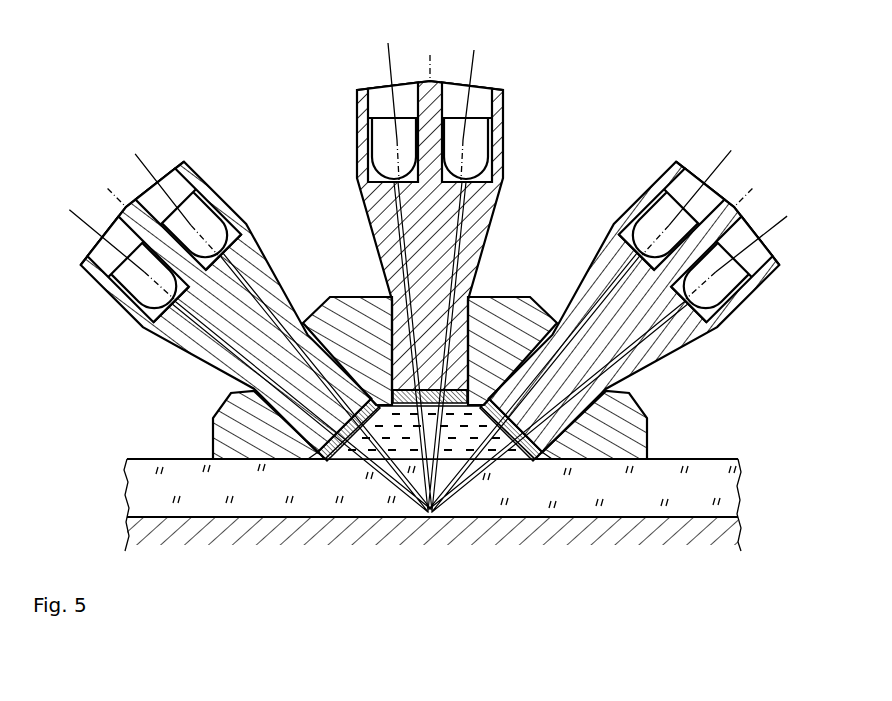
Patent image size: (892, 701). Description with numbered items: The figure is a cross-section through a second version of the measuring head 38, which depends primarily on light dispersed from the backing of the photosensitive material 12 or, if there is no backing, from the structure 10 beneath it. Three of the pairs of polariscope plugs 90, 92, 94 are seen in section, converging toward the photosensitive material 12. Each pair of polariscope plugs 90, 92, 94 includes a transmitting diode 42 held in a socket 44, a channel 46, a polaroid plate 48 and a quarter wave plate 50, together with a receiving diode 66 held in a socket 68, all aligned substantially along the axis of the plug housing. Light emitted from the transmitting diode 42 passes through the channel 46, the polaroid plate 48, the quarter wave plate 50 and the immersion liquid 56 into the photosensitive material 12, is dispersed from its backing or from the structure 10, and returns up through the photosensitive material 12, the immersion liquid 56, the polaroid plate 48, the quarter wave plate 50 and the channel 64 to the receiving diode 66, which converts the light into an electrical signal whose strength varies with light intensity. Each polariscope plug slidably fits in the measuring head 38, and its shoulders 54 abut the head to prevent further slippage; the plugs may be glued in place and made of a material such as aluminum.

The structure 10 is at (742, 527).
The photosensitive material 12 is at (738, 468).
The measuring head 38 is at (493, 297).
The transmitting diode 42 is at (480, 145).
The socket 44 is at (490, 180).
The channel 46 is at (468, 222).
The polaroid plate 48 is at (326, 322).
The quarter wave plate 50 is at (343, 297).
The shoulder 54 is at (236, 389).
The immersion liquid 56 is at (402, 458).
The channel 64 is at (397, 237).
The receiving diode 66 is at (367, 128).
The socket 68 is at (367, 177).
The pair of polariscope plugs 90 is at (772, 278).
The pair of polariscope plugs 92 is at (140, 333).
The pair of polariscope plugs 94 is at (500, 110).